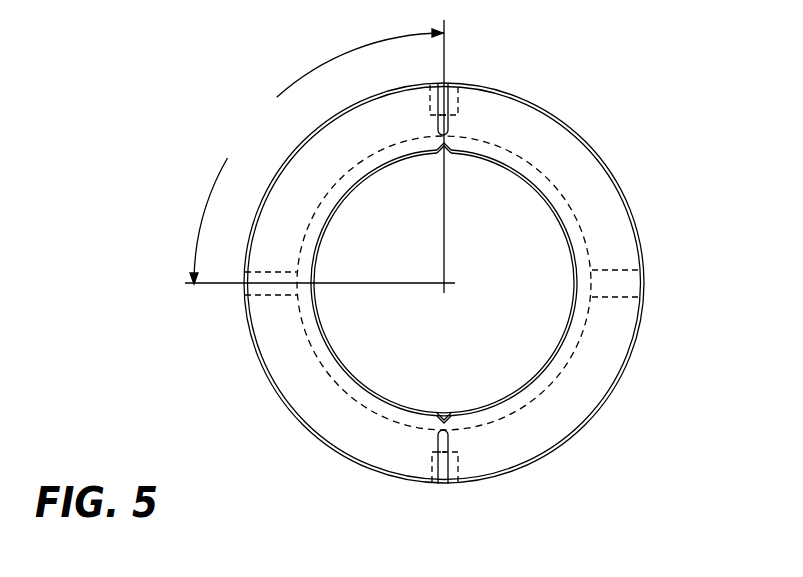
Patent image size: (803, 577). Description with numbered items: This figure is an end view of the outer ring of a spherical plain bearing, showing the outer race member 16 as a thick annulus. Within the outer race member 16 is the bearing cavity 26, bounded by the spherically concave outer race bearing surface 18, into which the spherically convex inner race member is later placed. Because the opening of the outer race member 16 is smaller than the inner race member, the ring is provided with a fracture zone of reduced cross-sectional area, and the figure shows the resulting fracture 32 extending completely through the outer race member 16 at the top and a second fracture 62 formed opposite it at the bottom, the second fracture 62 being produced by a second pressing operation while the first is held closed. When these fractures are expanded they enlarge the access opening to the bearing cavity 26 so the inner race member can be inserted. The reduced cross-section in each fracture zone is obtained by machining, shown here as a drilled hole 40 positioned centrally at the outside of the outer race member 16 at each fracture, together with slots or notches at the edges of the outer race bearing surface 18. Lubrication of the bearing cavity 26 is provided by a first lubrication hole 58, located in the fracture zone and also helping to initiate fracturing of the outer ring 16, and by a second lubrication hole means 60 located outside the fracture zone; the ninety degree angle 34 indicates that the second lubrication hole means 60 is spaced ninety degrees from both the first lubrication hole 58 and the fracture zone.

The outer race member 16 is at (628, 203).
The outer race bearing surface 18 is at (543, 178).
The bearing cavity 26 is at (522, 324).
The fracture 32 is at (460, 86).
The 90 degree angle 34 is at (212, 190).
The drilled hole 40 is at (437, 116).
The first lubrication hole 58 is at (247, 290).
The second lubrication hole means 60 is at (462, 136).
The second fracture 62 is at (462, 486).